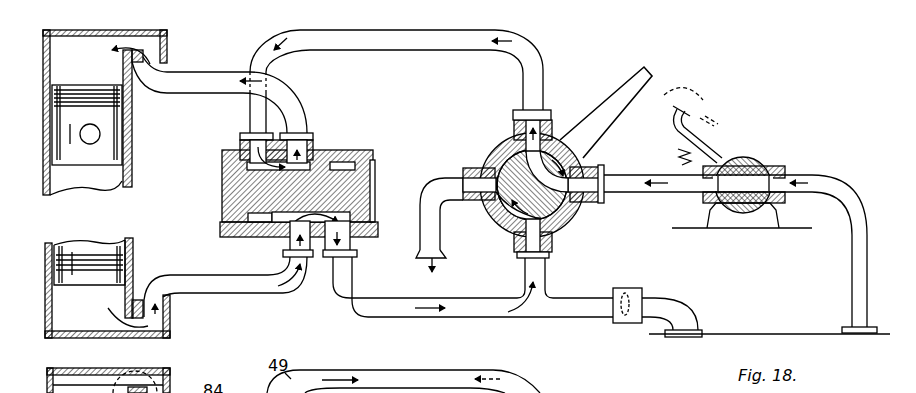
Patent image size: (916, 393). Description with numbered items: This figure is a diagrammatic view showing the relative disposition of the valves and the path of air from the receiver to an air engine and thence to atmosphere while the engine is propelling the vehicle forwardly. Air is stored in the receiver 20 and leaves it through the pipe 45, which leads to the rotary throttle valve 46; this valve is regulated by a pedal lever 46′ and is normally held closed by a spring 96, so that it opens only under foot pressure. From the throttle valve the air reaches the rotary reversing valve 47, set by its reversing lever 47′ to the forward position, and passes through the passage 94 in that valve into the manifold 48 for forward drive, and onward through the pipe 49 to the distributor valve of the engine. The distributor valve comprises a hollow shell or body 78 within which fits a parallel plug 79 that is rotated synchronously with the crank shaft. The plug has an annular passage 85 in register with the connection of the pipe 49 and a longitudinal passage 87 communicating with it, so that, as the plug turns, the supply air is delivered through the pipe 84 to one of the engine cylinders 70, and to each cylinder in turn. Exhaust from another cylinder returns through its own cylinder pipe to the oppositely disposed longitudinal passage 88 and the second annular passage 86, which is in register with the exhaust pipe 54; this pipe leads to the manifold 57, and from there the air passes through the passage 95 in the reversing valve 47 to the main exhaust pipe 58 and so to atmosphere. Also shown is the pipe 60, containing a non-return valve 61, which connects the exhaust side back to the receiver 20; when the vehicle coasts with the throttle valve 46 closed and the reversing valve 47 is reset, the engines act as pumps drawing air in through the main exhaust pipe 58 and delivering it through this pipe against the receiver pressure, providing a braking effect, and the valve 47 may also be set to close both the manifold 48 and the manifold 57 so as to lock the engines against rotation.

The engine cylinder 70 is at (43, 88).
The pipe 84 is at (205, 80).
The pipe 49 is at (278, 48).
The manifold 48 is at (540, 67).
The longitudinal passage 87 is at (316, 152).
The parallel plug 79 is at (376, 174).
The annular passage 85 is at (232, 168).
The annular passage 86 is at (372, 216).
The longitudinal passage 88 is at (276, 237).
The hollow shell or body of the distributor valve 78 is at (366, 235).
The exhaust pipe 54 is at (345, 302).
The manifold 57 is at (493, 302).
The pipe 60 is at (580, 300).
The non-return valve 61 is at (632, 299).
The receiver 20 is at (743, 334).
The rotary reversing valve 47 is at (573, 226).
The reversing lever 47′ is at (624, 89).
The passage 94 is at (553, 138).
The passage 95 is at (506, 217).
The main exhaust pipe 58 is at (440, 232).
The rotary throttle valve 46 is at (765, 164).
The pedal lever 46′ is at (672, 131).
The spring 96 is at (677, 156).
The pipe 45 is at (850, 233).